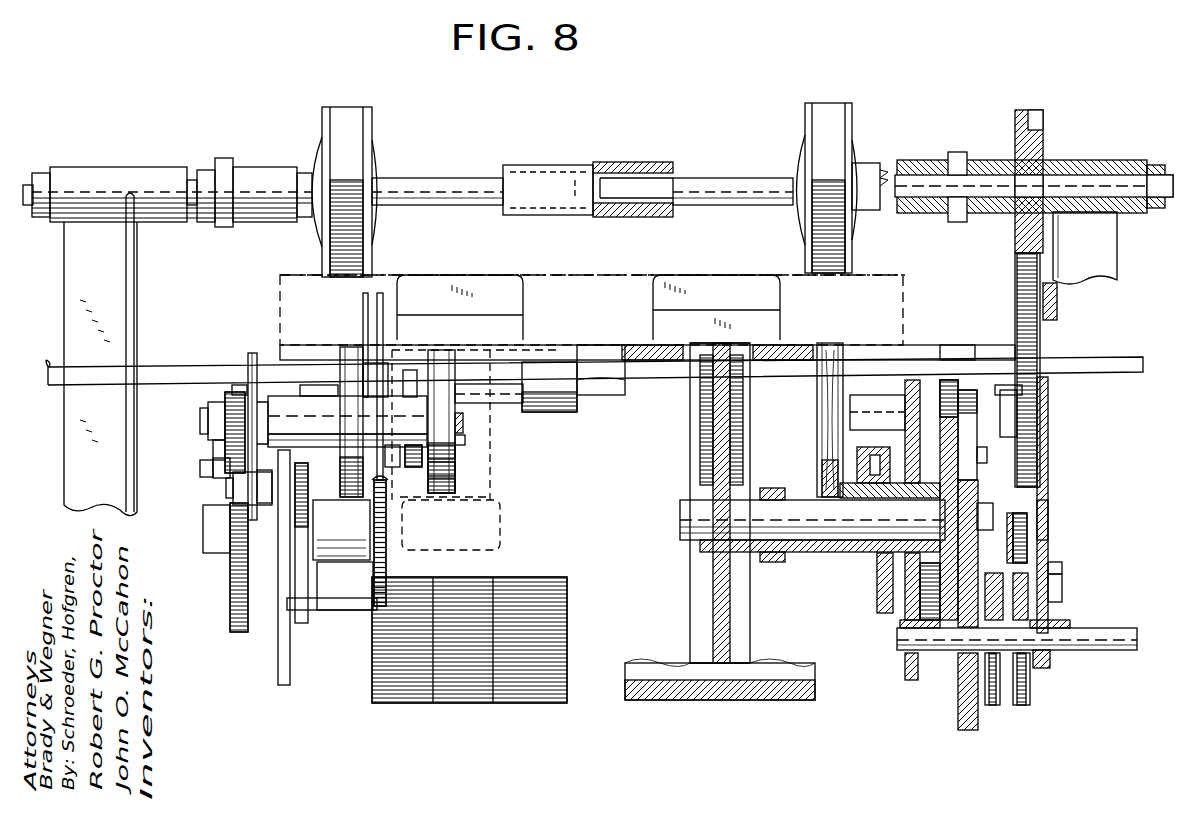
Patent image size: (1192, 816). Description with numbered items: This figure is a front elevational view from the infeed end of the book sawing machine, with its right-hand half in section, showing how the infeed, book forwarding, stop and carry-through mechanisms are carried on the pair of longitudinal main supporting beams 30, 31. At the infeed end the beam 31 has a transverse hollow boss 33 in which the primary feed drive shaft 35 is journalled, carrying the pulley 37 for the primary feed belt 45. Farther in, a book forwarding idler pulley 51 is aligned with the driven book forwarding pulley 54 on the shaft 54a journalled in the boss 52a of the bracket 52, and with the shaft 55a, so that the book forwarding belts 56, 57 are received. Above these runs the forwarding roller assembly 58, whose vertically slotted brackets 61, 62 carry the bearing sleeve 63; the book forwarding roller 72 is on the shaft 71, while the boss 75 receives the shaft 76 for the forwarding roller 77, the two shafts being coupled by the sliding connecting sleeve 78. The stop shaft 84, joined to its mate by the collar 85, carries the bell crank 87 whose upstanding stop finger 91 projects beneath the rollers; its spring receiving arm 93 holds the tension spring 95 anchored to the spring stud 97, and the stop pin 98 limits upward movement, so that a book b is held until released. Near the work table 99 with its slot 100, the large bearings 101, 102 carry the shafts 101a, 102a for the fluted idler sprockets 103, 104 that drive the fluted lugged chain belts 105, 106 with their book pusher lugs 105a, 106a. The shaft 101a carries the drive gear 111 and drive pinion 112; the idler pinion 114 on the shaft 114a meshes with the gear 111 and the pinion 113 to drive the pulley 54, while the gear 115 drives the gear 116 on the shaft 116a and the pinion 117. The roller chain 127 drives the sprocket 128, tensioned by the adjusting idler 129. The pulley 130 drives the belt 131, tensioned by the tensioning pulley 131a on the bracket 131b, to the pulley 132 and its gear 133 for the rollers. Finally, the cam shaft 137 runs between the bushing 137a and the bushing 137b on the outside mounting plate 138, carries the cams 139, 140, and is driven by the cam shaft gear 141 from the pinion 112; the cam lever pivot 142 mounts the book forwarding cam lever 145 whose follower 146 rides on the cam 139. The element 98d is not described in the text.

The longitudinal main supporting beam 30 is at (877, 600).
The longitudinal main supporting beam 31 is at (303, 624).
The transverse hollow boss 33 is at (290, 398).
The primary feed drive shaft 35 is at (456, 455).
The pulley 37 is at (456, 482).
The primary feed belt 45 is at (456, 468).
The book forwarding idler pulley 51 is at (318, 395).
The bracket 52 is at (910, 380).
The boss 52a is at (890, 340).
The driven book forwarding pulley 54 is at (945, 390).
The shaft 54a is at (970, 395).
The shaft 55a is at (208, 422).
The book forwarding belt 56 is at (830, 345).
The book forwarding belt 57 is at (360, 350).
The forwarding roller assembly 58 is at (296, 130).
The vertically slotted bracket 61 is at (1117, 248).
The vertically slotted bracket 62 is at (137, 272).
The bearing sleeve 63 is at (1085, 160).
The shaft 71 is at (705, 178).
The book forwarding roller 72 is at (820, 103).
The boss 75 is at (90, 170).
The shaft 76 is at (430, 178).
The forwarding roller 77 is at (350, 108).
The connecting sleeve 78 is at (627, 163).
The stop shaft 84 is at (506, 400).
The collar 85 is at (458, 440).
The bell crank 87 is at (440, 352).
The stop finger 91 is at (377, 300).
The spring receiving arm 93 is at (388, 478).
The tension spring 95 is at (372, 577).
The spring stud 97 is at (352, 612).
The stop pin 98 is at (393, 445).
The flange 98d is at (410, 370).
The work table 99 is at (1090, 360).
The slot 100 is at (592, 395).
The large bearing 101 is at (825, 552).
The shaft 101a is at (694, 516).
The large bearing 102 is at (355, 520).
The shaft 102a is at (500, 540).
The fluted idler sprocket 103 is at (752, 630).
The fluted idler sprocket 104 is at (480, 572).
The fluted lugged chain belt 105 is at (790, 345).
The book pusher lug 105a is at (700, 275).
The fluted lugged chain belt 106 is at (545, 345).
The book pusher lug 106a is at (486, 252).
The drive gear 111 is at (945, 498).
The drive pinion 112 is at (1013, 545).
The pinion 113 is at (950, 345).
The idler pinion 114 is at (987, 455).
The shaft 114a is at (985, 455).
The gear 115 is at (230, 610).
The gear 116 is at (213, 448).
The shaft 116a is at (205, 468).
The pinion 117 is at (225, 400).
The roller chain 127 is at (240, 390).
The sprocket 128 is at (247, 360).
The adjusting idler 129 is at (238, 492).
The pulley 130 is at (1048, 490).
The belt 131 is at (1022, 110).
The tensioning pulley 131a is at (1020, 280).
The bracket 131b is at (1057, 300).
The pulley 132 is at (1043, 125).
The gear 133 is at (960, 152).
The cam shaft 137 is at (1095, 628).
The bushing 137a is at (905, 660).
The bushing 137b is at (1050, 660).
The outside mounting plate 138 is at (1048, 518).
The cam 139 is at (1025, 707).
The cam 140 is at (993, 707).
The cam shaft gear 141 is at (958, 700).
The cam lever pivot 142 is at (1062, 590).
The book forwarding cam lever 145 is at (1062, 570).
The cam follower 146 is at (1027, 560).
The book b is at (583, 275).